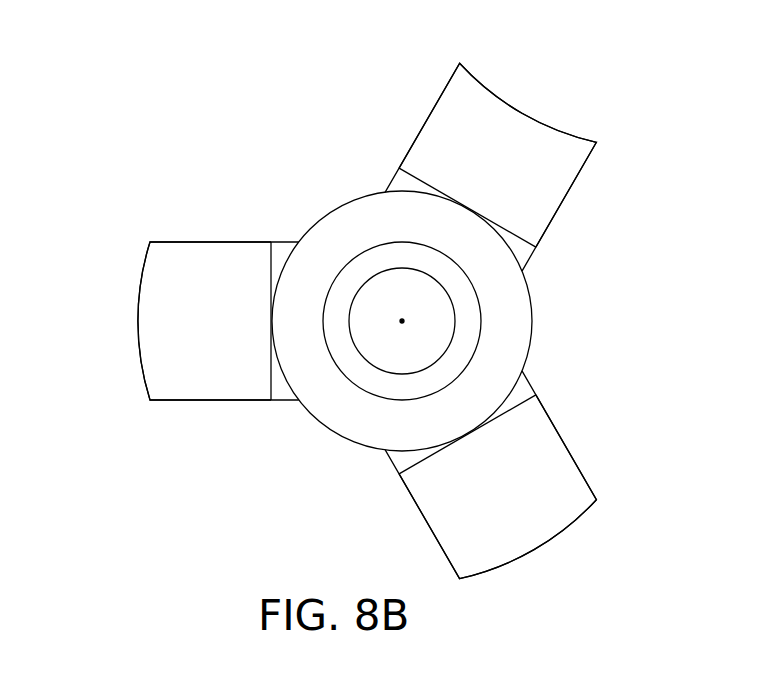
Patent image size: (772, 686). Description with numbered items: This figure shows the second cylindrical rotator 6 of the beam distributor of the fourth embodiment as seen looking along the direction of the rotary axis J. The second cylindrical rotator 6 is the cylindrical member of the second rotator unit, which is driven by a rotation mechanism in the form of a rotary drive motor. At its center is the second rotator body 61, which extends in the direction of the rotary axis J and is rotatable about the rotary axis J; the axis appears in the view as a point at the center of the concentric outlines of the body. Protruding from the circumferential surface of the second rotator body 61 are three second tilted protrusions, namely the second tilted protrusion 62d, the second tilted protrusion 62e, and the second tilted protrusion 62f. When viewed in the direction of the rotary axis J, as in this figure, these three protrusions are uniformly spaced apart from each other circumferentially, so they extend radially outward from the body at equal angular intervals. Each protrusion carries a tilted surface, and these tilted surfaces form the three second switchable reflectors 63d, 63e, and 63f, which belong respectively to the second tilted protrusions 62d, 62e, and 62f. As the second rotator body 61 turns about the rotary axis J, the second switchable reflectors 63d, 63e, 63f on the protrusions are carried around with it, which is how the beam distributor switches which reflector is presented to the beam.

The second cylindrical rotator 6 is at (391, 313).
The second rotator body 61 is at (327, 212).
The second tilted protrusion 62d is at (550, 493).
The second tilted protrusion 62e is at (509, 141).
The second tilted protrusion 62f is at (168, 361).
The second switchable reflector 63d is at (527, 523).
The second switchable reflector 63e is at (517, 108).
The second switchable reflector 63f is at (162, 327).
The rotary axis J is at (402, 321).